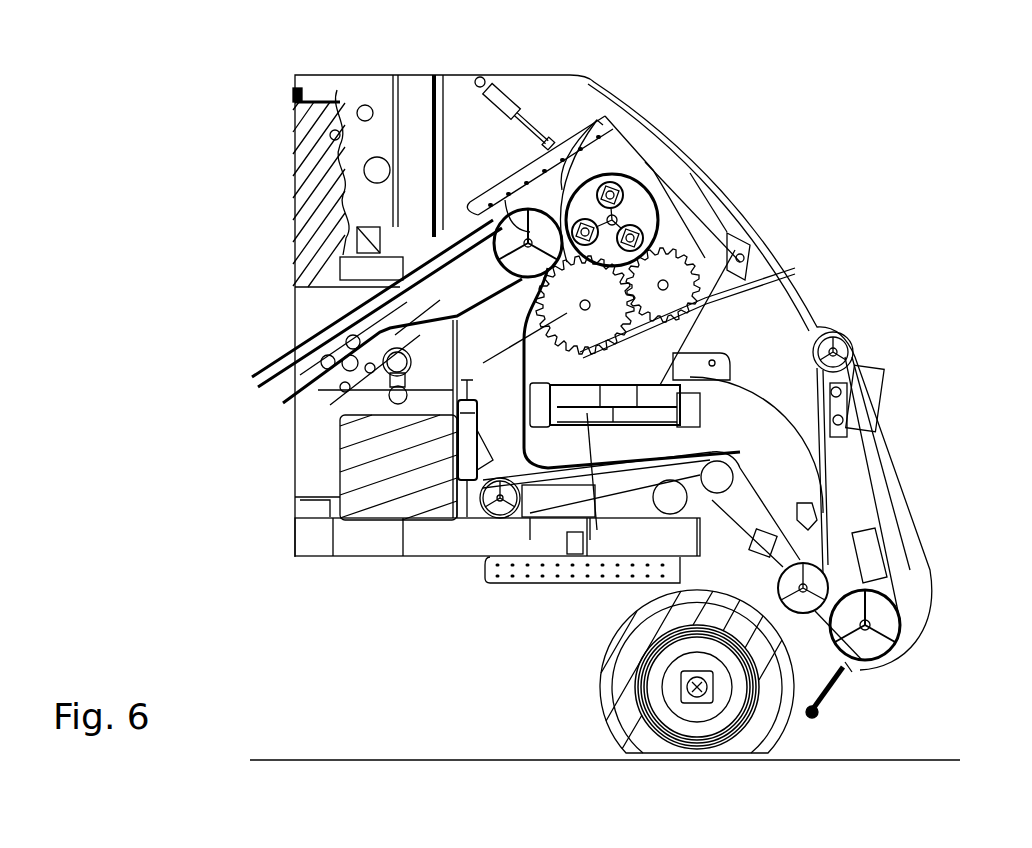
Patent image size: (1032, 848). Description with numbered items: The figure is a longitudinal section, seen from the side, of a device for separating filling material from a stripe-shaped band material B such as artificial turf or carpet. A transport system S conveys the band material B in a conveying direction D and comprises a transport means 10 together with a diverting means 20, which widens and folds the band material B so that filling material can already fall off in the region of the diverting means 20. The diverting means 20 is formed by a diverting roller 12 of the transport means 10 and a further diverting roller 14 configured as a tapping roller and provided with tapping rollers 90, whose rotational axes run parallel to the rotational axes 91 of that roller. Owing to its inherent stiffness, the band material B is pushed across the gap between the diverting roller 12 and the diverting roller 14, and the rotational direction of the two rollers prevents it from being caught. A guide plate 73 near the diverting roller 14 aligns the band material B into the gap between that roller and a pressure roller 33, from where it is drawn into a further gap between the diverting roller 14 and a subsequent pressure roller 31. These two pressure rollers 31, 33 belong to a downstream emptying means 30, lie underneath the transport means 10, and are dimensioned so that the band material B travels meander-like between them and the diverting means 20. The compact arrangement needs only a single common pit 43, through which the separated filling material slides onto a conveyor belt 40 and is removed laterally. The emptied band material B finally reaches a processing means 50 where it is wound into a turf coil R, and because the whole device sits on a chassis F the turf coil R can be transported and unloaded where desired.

The transport means 10 is at (497, 170).
The diverting roller 12 is at (455, 295).
The diverting roller 14 is at (663, 207).
The diverting means 20 is at (645, 175).
The emptying means 30 is at (700, 383).
The pressure roller 31 is at (455, 395).
The pressure roller 33 is at (715, 258).
The conveyor belt 40 is at (577, 427).
The pit 43 is at (640, 372).
The processing means 50 is at (933, 507).
The guide plate 73 is at (640, 152).
The tapping rollers 90 is at (562, 195).
The rotational axes 91 is at (517, 325).
The transport system S is at (270, 358).
The conveying direction D is at (318, 300).
The band material B is at (480, 520).
The turf coil R is at (789, 474).
The chassis F is at (578, 711).